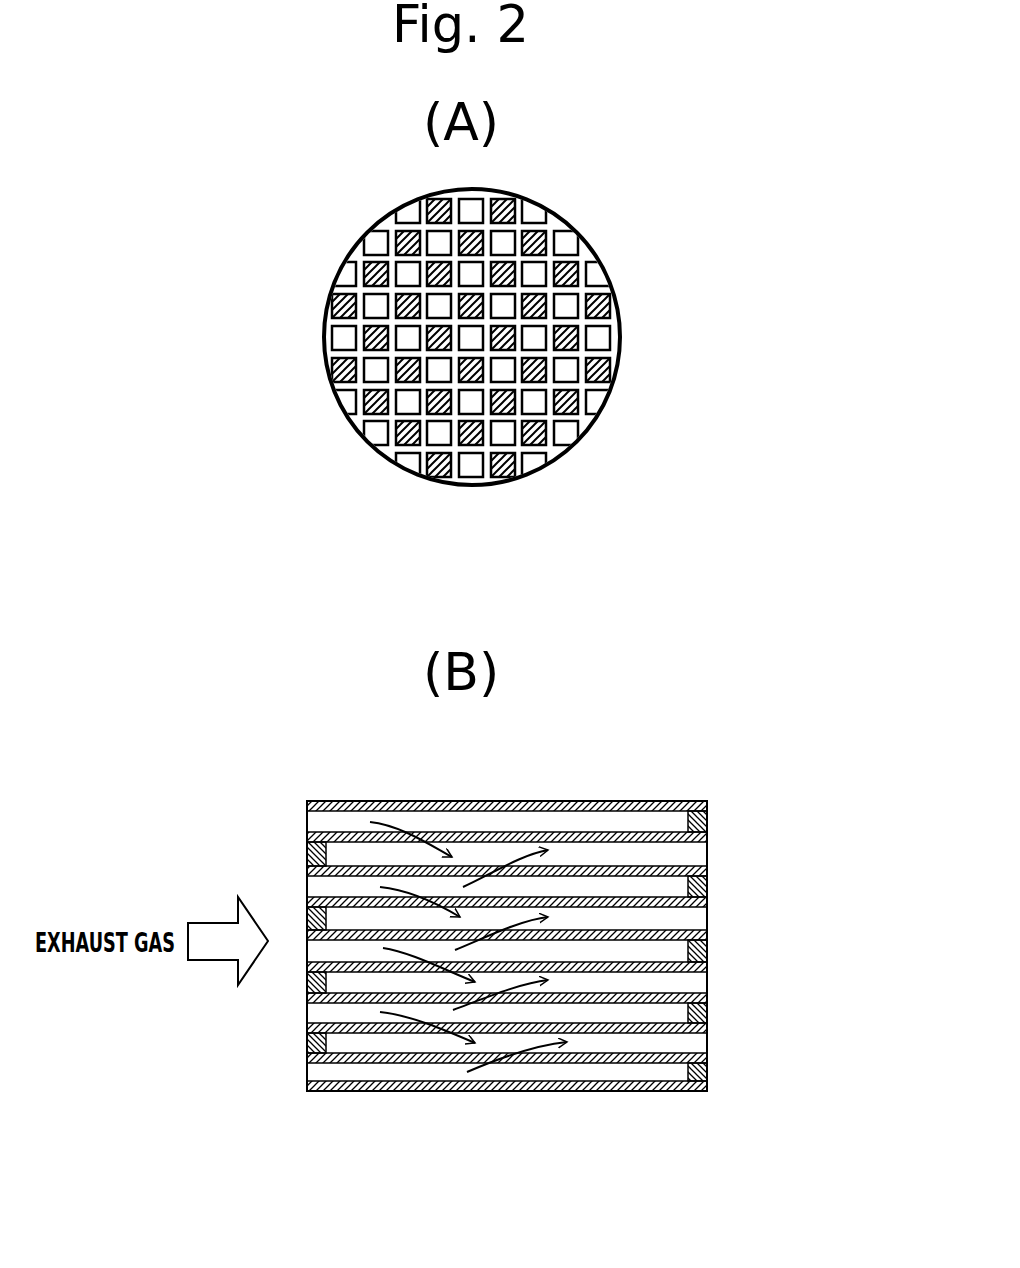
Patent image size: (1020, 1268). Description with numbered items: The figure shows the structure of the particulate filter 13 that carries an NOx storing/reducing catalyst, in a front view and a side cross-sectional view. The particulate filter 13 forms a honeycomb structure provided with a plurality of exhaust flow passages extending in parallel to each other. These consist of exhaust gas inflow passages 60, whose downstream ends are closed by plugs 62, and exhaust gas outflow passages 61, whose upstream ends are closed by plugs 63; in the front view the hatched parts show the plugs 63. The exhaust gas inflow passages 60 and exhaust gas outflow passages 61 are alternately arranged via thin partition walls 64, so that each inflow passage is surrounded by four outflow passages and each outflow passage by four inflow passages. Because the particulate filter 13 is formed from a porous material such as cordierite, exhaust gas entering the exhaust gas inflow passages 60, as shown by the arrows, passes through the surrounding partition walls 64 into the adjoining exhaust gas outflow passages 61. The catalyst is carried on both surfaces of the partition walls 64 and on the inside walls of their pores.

The particulate filter 13 is at (572, 212).
The exhaust gas inflow passage 60 is at (575, 306).
The exhaust gas outflow passage 61 is at (345, 847).
The plug 62 is at (707, 822).
The plug 63 is at (547, 447).
The partition wall 64 is at (438, 449).